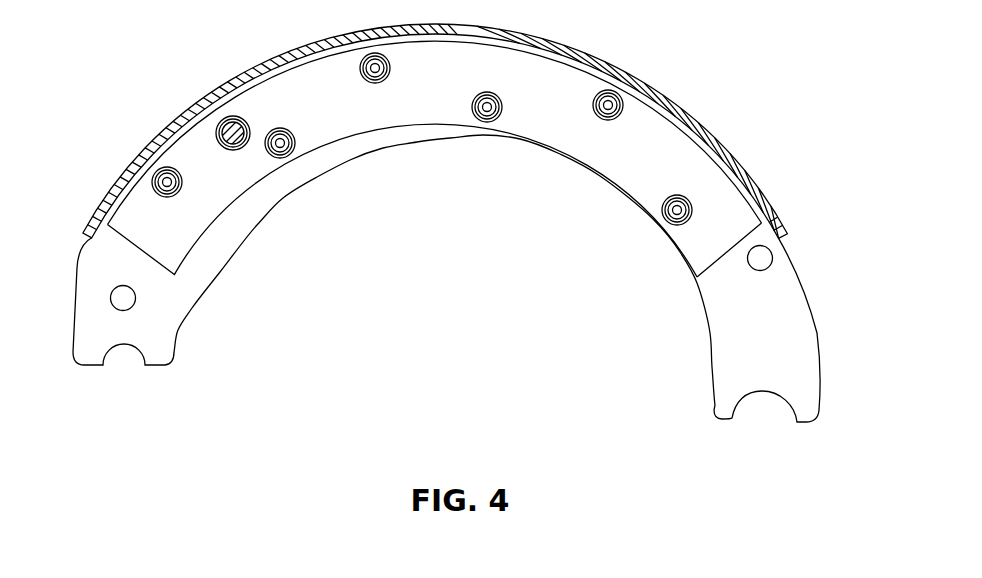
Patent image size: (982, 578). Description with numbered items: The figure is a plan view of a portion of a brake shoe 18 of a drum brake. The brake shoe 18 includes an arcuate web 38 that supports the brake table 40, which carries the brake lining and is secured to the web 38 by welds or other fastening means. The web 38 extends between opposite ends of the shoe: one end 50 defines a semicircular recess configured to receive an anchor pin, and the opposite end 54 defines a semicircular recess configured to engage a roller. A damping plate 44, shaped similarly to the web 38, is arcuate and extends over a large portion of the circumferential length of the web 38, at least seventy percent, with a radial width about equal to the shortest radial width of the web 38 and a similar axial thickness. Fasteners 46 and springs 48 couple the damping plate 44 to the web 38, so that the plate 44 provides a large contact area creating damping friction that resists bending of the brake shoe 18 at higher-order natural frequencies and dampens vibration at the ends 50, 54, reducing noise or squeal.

The brake shoe 18 is at (191, 89).
The web 38 is at (193, 273).
The brake table 40 is at (658, 92).
The damping plate 44 is at (650, 182).
The fastener 46 is at (422, 139).
The spring 48 is at (478, 108).
The end of web 50 is at (818, 370).
The opposite end of web 54 is at (72, 317).